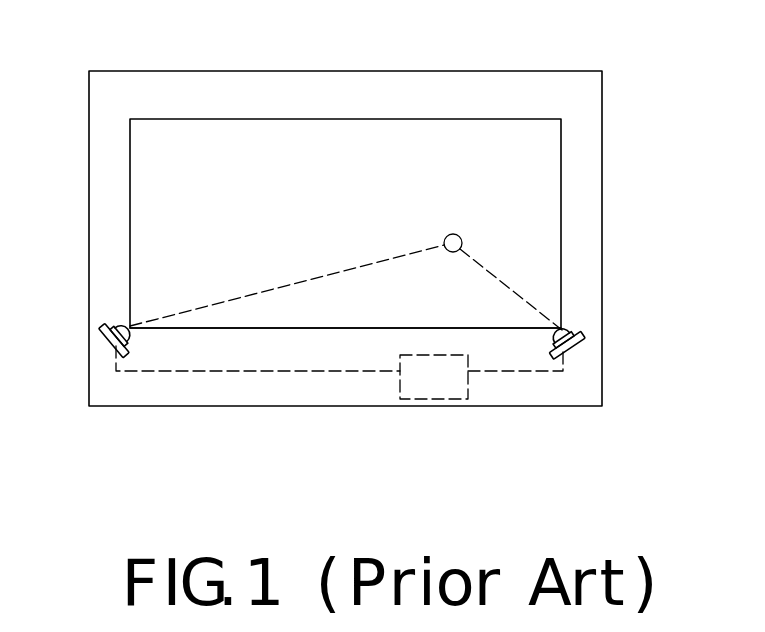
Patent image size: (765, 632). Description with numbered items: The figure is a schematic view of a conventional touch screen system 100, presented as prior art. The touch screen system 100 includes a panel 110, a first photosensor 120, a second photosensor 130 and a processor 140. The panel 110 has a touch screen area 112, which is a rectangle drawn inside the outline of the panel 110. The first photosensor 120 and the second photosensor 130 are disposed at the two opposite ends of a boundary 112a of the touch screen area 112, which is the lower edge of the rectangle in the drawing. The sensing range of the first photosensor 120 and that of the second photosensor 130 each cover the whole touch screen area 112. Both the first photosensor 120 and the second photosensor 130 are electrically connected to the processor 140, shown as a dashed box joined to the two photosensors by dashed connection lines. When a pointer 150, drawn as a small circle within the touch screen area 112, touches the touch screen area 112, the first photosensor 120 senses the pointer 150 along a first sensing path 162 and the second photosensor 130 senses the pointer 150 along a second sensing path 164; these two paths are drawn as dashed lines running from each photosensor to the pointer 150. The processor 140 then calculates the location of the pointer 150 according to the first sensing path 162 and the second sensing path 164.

The touch screen system 100 is at (722, 477).
The panel 110 is at (602, 109).
The touch screen area 112 is at (442, 144).
The boundary 112a is at (325, 328).
The first photosensor 120 is at (104, 326).
The second photosensor 130 is at (576, 346).
The processor 140 is at (430, 400).
The pointer 150 is at (461, 238).
The first sensing path 162 is at (237, 300).
The second sensing path 164 is at (526, 300).